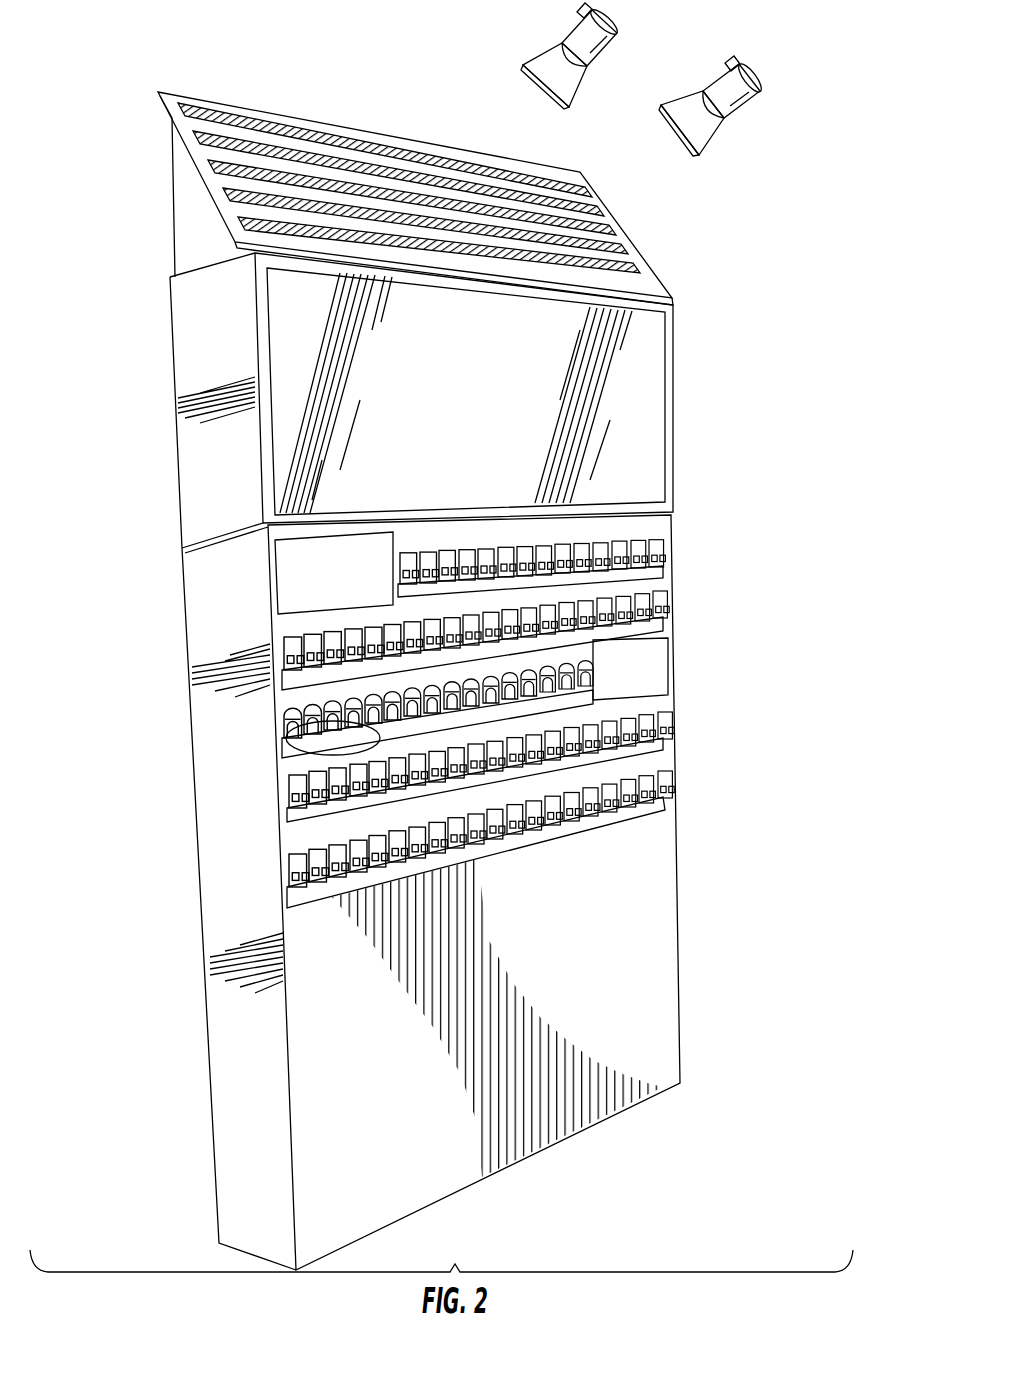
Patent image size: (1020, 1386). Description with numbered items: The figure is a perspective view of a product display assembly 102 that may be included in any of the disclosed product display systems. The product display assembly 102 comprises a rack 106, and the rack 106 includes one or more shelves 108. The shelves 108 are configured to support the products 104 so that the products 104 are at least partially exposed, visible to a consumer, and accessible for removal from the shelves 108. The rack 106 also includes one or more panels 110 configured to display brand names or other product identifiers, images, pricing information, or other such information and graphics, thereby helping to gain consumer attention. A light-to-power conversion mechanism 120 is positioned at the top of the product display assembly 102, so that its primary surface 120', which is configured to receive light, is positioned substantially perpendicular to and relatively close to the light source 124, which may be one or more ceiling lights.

The product display assembly 102 is at (164, 372).
The products 104 is at (405, 840).
The rack 106 is at (222, 707).
The shelves 108 is at (542, 787).
The panels 110 is at (343, 445).
The light-to-power conversion mechanism 120 is at (384, 198).
The primary surface 120' is at (409, 188).
The light source 124 is at (677, 117).